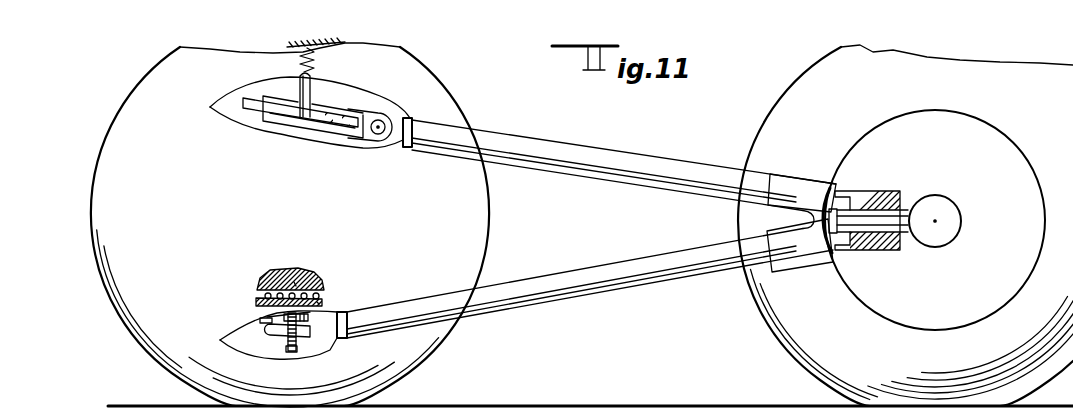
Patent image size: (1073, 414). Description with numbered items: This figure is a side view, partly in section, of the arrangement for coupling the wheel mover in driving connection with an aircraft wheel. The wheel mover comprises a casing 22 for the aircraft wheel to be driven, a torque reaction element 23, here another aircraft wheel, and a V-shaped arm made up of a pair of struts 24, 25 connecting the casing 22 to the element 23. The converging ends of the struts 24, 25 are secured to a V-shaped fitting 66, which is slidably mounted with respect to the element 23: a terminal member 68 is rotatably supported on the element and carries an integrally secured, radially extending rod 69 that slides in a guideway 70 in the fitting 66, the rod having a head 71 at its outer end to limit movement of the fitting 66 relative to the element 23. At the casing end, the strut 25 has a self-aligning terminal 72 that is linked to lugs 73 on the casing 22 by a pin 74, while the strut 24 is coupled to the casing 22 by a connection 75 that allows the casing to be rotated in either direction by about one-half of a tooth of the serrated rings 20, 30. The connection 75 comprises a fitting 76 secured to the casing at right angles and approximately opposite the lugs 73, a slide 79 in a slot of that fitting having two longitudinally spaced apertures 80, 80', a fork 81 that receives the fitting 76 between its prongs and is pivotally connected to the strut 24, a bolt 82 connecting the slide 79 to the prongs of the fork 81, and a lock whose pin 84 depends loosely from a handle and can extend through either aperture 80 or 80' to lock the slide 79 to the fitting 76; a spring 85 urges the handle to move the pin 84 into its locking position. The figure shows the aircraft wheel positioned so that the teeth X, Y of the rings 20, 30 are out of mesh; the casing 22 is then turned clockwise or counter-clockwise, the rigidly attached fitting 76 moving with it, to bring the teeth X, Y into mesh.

The serrated ring 20 is at (260, 298).
The casing 22 is at (228, 110).
The torque reaction element 23 is at (953, 155).
The strut 24 is at (563, 127).
The strut 25 is at (567, 290).
The serrated ring 30 is at (278, 273).
The V-shaped fitting 66 is at (812, 175).
The terminal member 68 is at (961, 231).
The rod 69 is at (873, 216).
The guideway 70 is at (884, 236).
The head 71 is at (836, 189).
The self-aligning terminal 72 is at (272, 331).
The lugs 73 is at (263, 318).
The pin 74 is at (292, 350).
The connection 75 is at (256, 133).
The fitting 76 is at (255, 97).
The slide 79 is at (298, 116).
The aperture 80 is at (300, 131).
The aperture 80' is at (325, 112).
The fork 81 is at (363, 131).
The bolt 82 is at (302, 118).
The pin 84 is at (315, 92).
The spring 85 is at (288, 48).
The teeth x is at (317, 302).
The teeth y is at (294, 282).